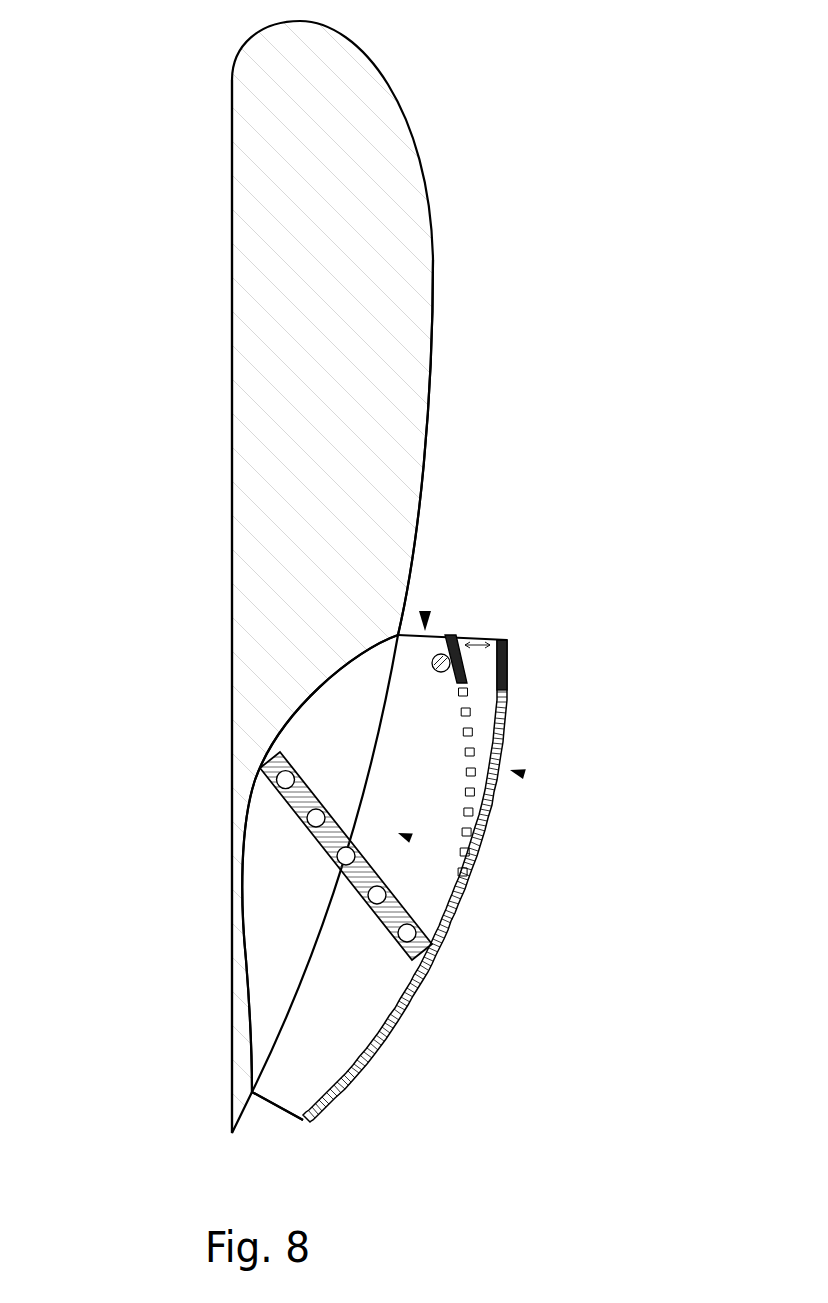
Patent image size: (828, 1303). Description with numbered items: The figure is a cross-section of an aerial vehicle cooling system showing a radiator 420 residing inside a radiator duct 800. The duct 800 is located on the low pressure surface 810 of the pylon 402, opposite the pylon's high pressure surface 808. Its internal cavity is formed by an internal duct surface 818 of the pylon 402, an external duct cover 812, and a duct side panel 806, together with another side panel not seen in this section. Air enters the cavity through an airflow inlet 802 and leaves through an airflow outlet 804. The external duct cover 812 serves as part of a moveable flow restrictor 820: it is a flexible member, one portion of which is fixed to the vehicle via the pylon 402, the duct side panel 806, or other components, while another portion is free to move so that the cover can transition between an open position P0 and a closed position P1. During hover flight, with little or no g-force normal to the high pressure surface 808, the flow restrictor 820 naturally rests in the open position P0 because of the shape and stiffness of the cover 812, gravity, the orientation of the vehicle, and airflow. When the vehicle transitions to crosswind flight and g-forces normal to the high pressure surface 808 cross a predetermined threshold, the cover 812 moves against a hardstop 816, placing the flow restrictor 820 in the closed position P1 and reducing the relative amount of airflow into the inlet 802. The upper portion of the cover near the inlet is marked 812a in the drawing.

The pylon 402 is at (335, 125).
The high pressure surface 808 is at (232, 167).
The low pressure surface 810 is at (436, 240).
The internal duct surface 818 is at (245, 890).
The duct side panel 806 is at (317, 1017).
The airflow outlet 804 is at (265, 1118).
The external duct cover 812 is at (503, 738).
The skin upper portion 812a is at (508, 662).
The airflow inlet 802 is at (425, 612).
The closed position P1 is at (452, 630).
The open position P0 is at (502, 636).
The hardstop 816 is at (438, 677).
The moveable flow restrictor 820 is at (515, 775).
The radiator duct 800 is at (405, 838).
The radiator 420 is at (327, 850).